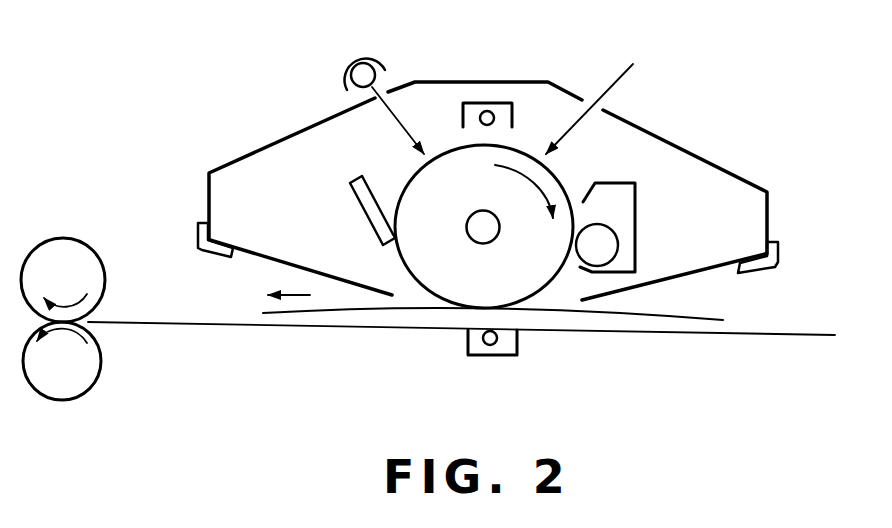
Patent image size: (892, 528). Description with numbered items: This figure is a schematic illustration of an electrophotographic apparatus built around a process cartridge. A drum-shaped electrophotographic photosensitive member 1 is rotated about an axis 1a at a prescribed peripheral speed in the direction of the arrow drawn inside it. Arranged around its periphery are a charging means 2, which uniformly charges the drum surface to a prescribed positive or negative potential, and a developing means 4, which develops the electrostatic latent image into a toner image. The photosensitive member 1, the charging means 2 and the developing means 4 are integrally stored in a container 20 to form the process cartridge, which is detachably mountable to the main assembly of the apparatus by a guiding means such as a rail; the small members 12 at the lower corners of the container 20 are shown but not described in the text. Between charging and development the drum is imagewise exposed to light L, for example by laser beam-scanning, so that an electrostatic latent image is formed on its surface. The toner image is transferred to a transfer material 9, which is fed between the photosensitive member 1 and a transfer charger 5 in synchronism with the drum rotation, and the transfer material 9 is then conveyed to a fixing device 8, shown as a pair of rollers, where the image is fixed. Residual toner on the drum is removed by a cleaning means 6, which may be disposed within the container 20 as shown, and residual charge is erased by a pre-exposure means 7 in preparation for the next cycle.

The photosensitive member 1 is at (414, 172).
The axis 1a is at (498, 240).
The primary charger 2 is at (490, 104).
The developing means 4 is at (637, 210).
The transfer charger 5 is at (487, 358).
The cleaning means 6 is at (358, 202).
The pre-exposure means 7 is at (347, 64).
The fixing device 8 is at (70, 238).
The transfer material 9 is at (688, 315).
The positioning members 12 is at (197, 231).
The container 20 is at (716, 165).
The light L is at (632, 72).